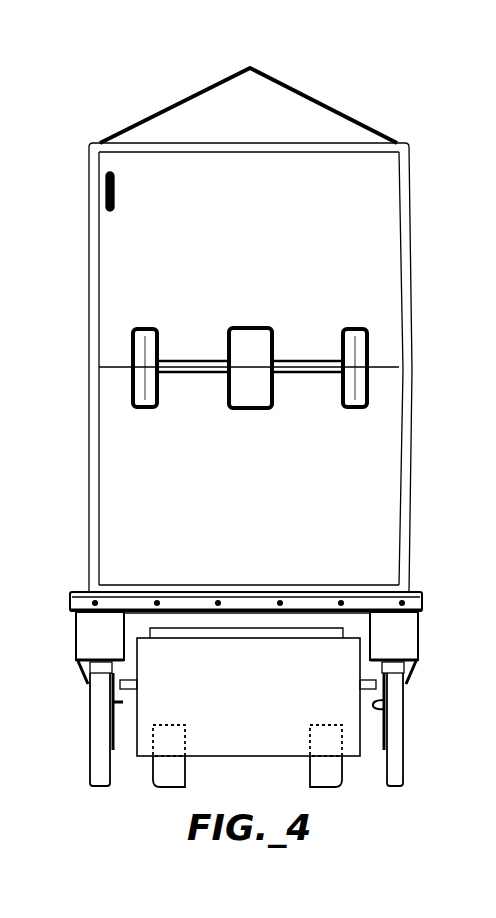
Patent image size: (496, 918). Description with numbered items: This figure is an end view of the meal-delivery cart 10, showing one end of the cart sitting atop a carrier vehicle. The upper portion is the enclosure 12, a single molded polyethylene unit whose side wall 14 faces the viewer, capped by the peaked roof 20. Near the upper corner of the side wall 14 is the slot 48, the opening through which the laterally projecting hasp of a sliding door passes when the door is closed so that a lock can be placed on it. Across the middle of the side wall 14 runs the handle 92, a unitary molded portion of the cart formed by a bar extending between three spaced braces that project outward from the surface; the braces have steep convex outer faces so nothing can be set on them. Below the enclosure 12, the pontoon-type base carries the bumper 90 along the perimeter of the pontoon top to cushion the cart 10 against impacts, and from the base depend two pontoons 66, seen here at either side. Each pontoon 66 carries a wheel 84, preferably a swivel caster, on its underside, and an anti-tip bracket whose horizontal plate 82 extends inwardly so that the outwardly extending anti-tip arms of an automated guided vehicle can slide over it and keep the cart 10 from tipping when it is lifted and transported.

The meal-delivery cart 10 is at (277, 429).
The enclosure 12 is at (415, 410).
The side wall 14 is at (378, 240).
The roof 20 is at (152, 113).
The slot 48 is at (113, 185).
The pontoon 66 is at (408, 638).
The horizontal plate 82 is at (376, 708).
The wheel 84 is at (407, 767).
The bumper 90 is at (412, 602).
The handle 92 is at (200, 375).